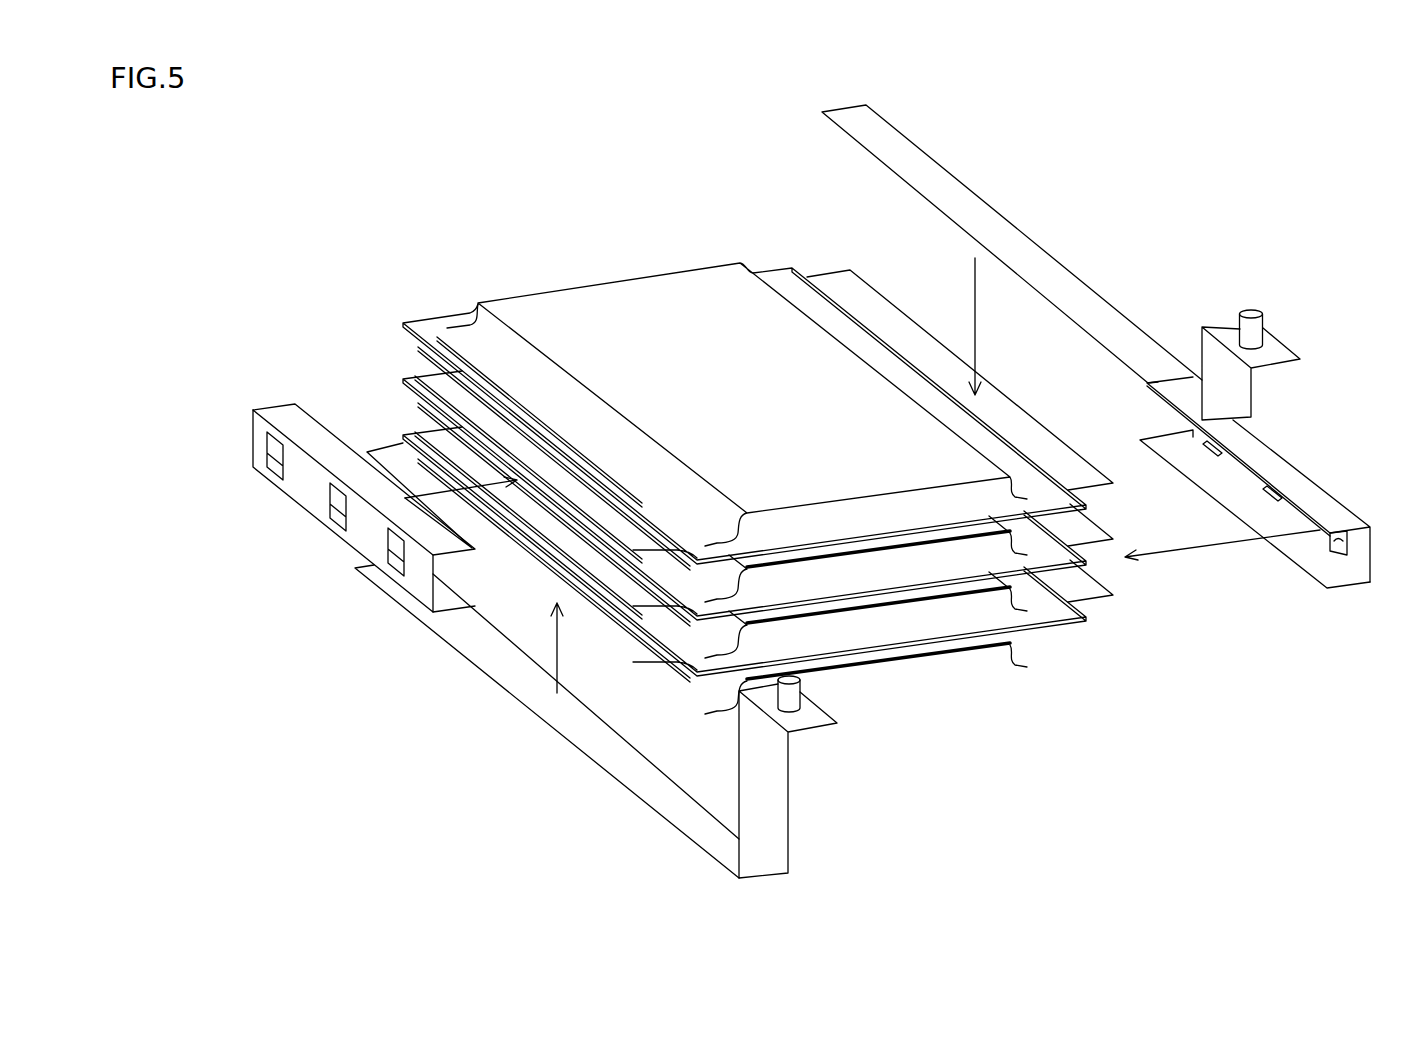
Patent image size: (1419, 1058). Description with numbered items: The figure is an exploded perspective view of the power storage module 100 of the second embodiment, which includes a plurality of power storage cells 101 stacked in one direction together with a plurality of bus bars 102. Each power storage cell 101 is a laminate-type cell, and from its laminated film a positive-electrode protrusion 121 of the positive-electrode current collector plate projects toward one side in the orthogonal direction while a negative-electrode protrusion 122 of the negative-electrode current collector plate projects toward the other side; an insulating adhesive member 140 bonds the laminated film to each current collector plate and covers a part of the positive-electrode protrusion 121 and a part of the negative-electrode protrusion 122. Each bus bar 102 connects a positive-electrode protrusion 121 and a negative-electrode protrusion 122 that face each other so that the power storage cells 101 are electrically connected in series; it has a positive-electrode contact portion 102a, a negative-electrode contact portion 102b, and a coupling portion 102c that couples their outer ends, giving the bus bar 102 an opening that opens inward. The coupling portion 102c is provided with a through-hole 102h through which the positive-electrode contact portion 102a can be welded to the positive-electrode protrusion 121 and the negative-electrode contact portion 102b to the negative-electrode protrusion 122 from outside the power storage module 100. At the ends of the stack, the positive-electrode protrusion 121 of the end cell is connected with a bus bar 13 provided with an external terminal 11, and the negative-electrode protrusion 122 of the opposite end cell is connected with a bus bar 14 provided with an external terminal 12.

The power storage module 100 is at (735, 475).
The power storage cell 101 is at (910, 618).
The bus bar 102 is at (791, 492).
The positive-electrode contact portion 102a is at (275, 408).
The negative-electrode contact portion 102b is at (1300, 558).
The coupling portion 102c is at (300, 490).
The through-hole 102h is at (338, 520).
The external terminal 11 is at (802, 686).
The external terminal 12 is at (1252, 308).
The bus bar 13 is at (553, 745).
The bus bar 14 is at (1121, 293).
The positive-electrode protrusion 121 is at (402, 325).
The negative-electrode protrusion 122 is at (402, 381).
The adhesive member 140 is at (437, 342).